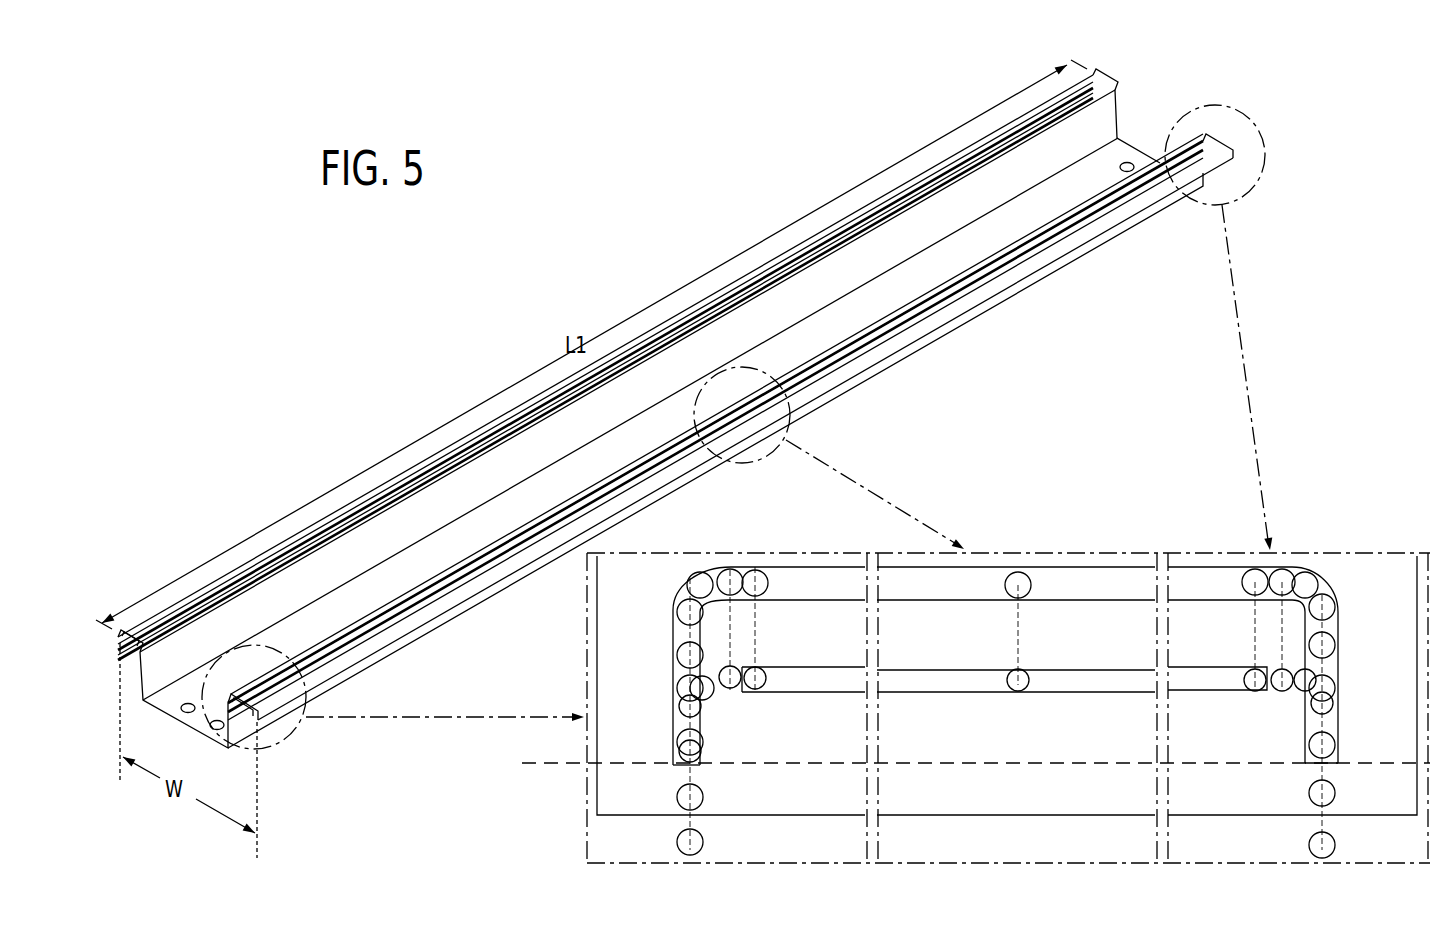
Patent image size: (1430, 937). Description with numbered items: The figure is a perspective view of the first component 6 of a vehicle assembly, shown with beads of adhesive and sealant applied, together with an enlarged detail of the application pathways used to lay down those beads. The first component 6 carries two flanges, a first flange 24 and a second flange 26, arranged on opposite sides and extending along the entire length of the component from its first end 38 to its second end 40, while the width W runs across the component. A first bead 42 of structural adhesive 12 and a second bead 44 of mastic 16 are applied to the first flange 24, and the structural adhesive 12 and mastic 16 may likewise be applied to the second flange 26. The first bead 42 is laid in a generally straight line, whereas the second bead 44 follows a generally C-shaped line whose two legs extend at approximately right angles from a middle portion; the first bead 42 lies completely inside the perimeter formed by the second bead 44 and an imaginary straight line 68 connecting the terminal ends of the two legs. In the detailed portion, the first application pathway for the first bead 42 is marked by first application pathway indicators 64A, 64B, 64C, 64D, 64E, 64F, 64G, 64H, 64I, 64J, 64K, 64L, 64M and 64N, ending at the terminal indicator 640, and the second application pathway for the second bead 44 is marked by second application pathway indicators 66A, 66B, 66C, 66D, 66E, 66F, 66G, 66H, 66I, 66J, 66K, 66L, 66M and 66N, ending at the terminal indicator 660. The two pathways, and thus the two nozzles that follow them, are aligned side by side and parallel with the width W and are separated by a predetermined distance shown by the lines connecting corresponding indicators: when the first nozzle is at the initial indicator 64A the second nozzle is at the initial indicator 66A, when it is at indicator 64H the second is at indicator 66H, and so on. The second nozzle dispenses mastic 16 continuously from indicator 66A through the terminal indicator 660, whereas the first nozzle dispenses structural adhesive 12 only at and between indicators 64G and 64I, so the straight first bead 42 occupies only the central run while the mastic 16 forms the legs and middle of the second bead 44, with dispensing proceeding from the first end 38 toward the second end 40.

The first component 6 is at (176, 696).
The structural adhesive 12 is at (807, 683).
The mastic 16 is at (853, 581).
The first flange 24 is at (398, 632).
The second flange 26 is at (162, 620).
The first end 38 is at (245, 714).
The second end 40 is at (1120, 117).
The first bead 42 is at (700, 298).
The second bead 44 is at (786, 271).
The imaginary straight line 68 is at (528, 770).
The initial first application pathway indicator 64A is at (698, 843).
The first application pathway indicator 64B is at (698, 797).
The first application pathway indicator 64C is at (680, 750).
The first application pathway indicator 64D is at (683, 706).
The first application pathway indicator 64E is at (708, 694).
The first application pathway indicator 64F is at (735, 688).
The first application pathway indicator 64G is at (758, 682).
The first application pathway indicator 64H is at (1012, 675).
The first application pathway indicator 64I is at (1255, 692).
The first application pathway indicator 64J is at (1282, 692).
The first application pathway indicator 64K is at (1310, 686).
The first application pathway indicator 64L is at (1330, 708).
The first application pathway indicator 64M is at (1330, 748).
The first application pathway indicator 64N is at (1310, 793).
The initial second application pathway indicator 66A is at (684, 742).
The second application pathway indicator 66B is at (684, 685).
The second application pathway indicator 66C is at (686, 647).
The second application pathway indicator 66D is at (683, 605).
The second application pathway indicator 66E is at (696, 580).
The second application pathway indicator 66F is at (728, 593).
The second application pathway indicator 66G is at (760, 594).
The second application pathway indicator 66H is at (1012, 594).
The second application pathway indicator 66I is at (1253, 594).
The second application pathway indicator 66J is at (1280, 597).
The second application pathway indicator 66K is at (1313, 583).
The second application pathway indicator 66L is at (1328, 615).
The second application pathway indicator 66M is at (1328, 645).
The second application pathway indicator 66N is at (1328, 692).
The terminal second application pathway indicator 660 is at (1328, 764).
The terminal first application pathway indicator 640 is at (1333, 845).